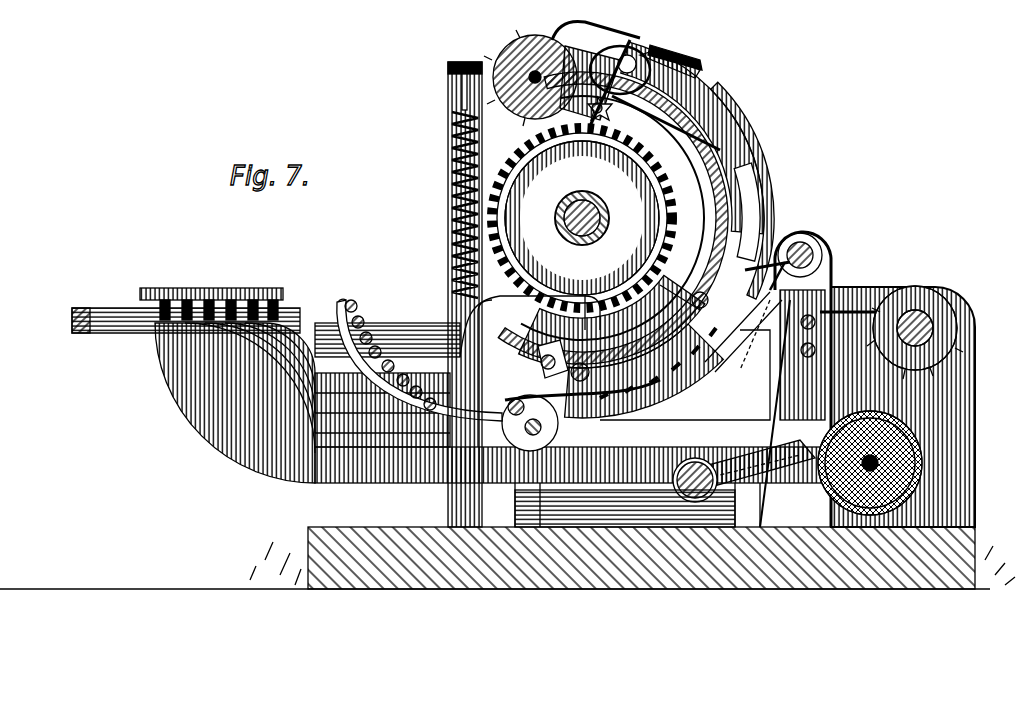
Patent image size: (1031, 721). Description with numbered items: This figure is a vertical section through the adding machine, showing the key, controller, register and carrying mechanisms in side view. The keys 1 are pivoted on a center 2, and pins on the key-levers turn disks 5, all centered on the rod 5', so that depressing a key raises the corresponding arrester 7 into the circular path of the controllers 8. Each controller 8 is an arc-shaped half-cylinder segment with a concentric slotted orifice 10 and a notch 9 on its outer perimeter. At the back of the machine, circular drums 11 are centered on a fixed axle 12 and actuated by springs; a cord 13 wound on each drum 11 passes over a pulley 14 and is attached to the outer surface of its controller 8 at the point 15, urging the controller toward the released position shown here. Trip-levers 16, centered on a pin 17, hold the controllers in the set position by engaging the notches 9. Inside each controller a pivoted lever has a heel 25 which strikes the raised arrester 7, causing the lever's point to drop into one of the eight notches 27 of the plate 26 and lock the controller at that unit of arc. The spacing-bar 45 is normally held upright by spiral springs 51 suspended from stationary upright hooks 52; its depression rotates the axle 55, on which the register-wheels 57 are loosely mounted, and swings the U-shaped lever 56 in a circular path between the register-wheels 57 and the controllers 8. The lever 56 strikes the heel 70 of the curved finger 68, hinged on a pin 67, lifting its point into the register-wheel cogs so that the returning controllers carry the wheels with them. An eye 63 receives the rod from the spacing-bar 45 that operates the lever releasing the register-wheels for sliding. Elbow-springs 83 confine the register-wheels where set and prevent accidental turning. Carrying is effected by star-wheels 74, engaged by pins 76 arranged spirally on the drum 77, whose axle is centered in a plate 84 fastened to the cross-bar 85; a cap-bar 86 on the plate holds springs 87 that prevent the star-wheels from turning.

The keys 1 is at (185, 290).
The center 2 is at (683, 493).
The disk 5 is at (520, 423).
The rod 5' is at (419, 372).
The arresters 7 is at (372, 336).
The controllers 8 is at (722, 120).
The notch 9 is at (748, 156).
The slotted orifice 10 is at (748, 176).
The circular drums 11 is at (952, 442).
The fixed axle 12 is at (903, 407).
The cord 13 is at (838, 278).
The pulleys 14 is at (812, 232).
The points 15 is at (742, 270).
The trip-levers 16 is at (878, 300).
The pin 17 is at (743, 332).
The heel 25 is at (560, 395).
The plate 26 is at (667, 373).
The notches 27 is at (707, 409).
The spacing-bar 45 is at (72, 318).
The spiral springs 51 is at (456, 190).
The stationary upright hooks 52 is at (450, 95).
The axle 55 is at (620, 200).
The U-shaped lever 56 is at (540, 322).
The register-wheels 57 is at (578, 195).
The eye 63 is at (582, 218).
The pin 67 is at (540, 360).
The curved finger 68 is at (612, 321).
The heel 70 is at (681, 286).
The star-wheels 74 is at (666, 118).
The pins 76 is at (494, 52).
The drum 77 is at (548, 70).
The elbow-springs 83 is at (680, 150).
The plate 84 is at (610, 102).
The cross-bar 85 is at (660, 75).
The cap-bar 86 is at (572, 456).
The springs 87 is at (626, 44).